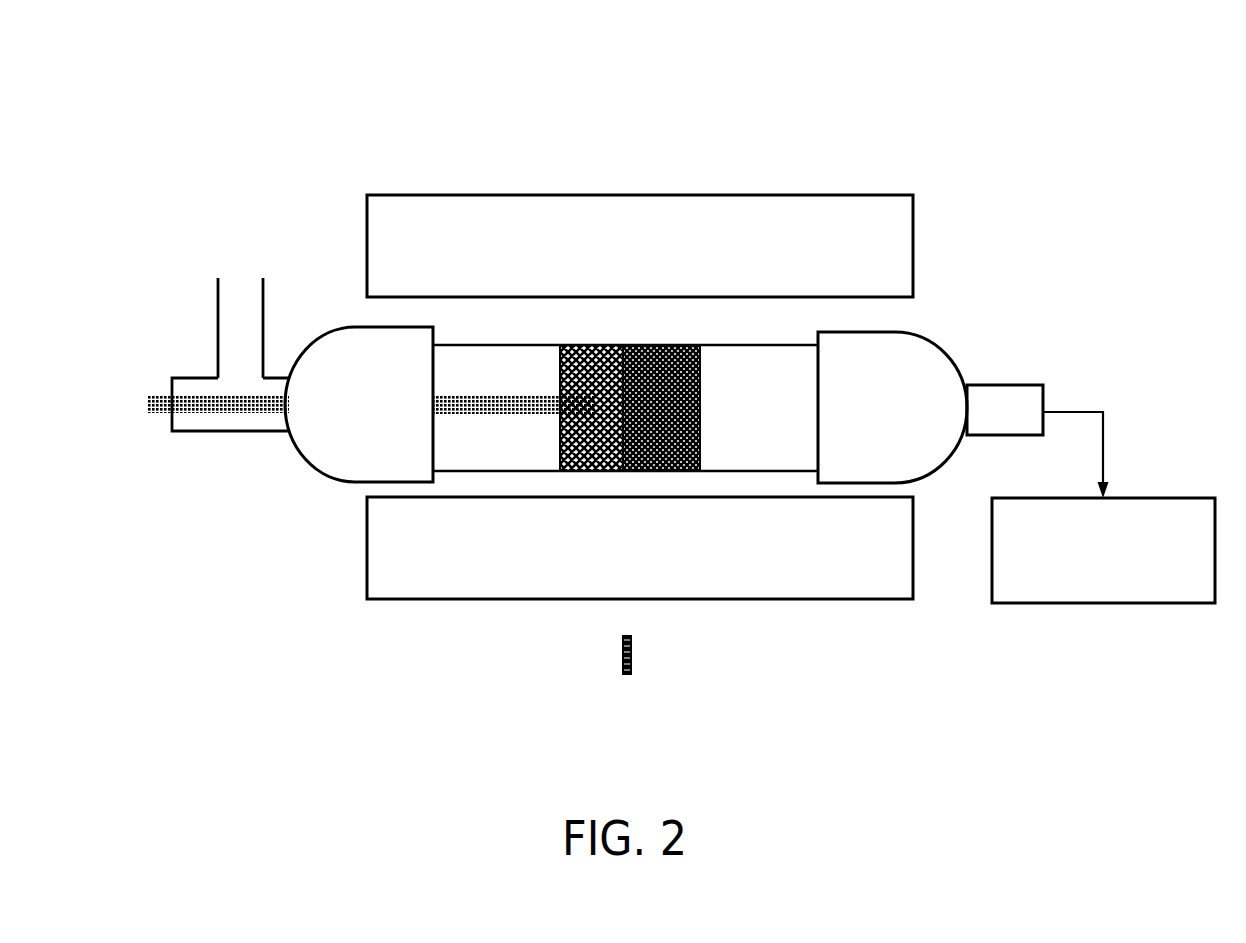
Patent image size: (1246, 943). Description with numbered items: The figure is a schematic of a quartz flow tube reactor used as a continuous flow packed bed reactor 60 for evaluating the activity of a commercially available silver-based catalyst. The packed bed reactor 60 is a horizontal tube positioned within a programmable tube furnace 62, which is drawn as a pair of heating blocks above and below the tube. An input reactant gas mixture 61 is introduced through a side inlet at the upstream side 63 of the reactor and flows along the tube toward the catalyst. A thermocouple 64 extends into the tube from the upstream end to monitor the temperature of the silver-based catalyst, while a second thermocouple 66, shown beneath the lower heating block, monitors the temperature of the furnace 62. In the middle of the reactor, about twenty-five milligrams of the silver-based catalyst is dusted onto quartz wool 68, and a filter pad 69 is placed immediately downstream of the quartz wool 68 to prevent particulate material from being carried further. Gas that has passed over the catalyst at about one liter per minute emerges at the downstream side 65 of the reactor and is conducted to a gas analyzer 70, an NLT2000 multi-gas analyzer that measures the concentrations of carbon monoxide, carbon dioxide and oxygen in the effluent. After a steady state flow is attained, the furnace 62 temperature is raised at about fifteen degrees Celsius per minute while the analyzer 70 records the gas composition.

The packed bed reactor 60 is at (222, 534).
The input reactant gas mixture 61 is at (238, 334).
The programmable tube furnace 62 is at (887, 262).
The upstream side 63 is at (252, 448).
The thermocouple 64 is at (521, 428).
The downstream side 65 is at (997, 450).
The thermocouple 66 is at (601, 651).
The quartz wool 68 is at (571, 362).
The filter pad 69 is at (671, 431).
The gas analyzer 70 is at (1088, 567).